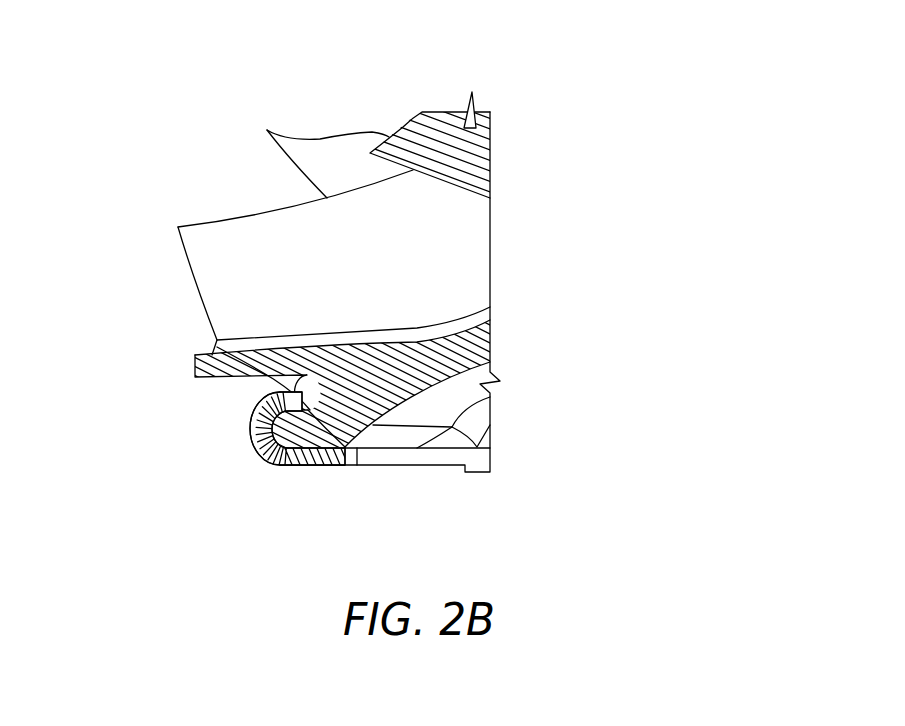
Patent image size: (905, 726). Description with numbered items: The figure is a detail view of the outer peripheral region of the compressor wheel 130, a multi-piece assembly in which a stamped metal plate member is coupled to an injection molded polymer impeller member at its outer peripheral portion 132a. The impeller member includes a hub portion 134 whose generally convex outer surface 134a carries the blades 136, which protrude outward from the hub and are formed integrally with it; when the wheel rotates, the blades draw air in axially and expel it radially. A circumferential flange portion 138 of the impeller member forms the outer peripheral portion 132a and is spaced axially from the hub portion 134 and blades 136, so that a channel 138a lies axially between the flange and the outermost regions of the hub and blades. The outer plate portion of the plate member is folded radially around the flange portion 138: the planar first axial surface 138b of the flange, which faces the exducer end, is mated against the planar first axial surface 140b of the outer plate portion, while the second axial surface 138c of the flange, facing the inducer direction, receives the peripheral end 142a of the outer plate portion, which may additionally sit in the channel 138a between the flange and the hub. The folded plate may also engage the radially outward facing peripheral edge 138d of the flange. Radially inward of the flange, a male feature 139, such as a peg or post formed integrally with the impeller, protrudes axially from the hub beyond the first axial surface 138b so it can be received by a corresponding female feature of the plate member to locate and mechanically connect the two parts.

The compressor wheel 130 is at (653, 48).
The outer peripheral portion 132a is at (360, 460).
The hub portion 134 is at (198, 368).
The outer surface 134a is at (342, 343).
The blades 136 is at (267, 130).
The flange portion 138 is at (332, 432).
The channel 138a is at (167, 418).
The first axial surface 138b is at (300, 450).
The second axial surface 138c is at (272, 445).
The peripheral edge 138d is at (293, 408).
The male feature 139 is at (447, 458).
The first axial surface 140b is at (300, 450).
The peripheral end 142a is at (217, 340).